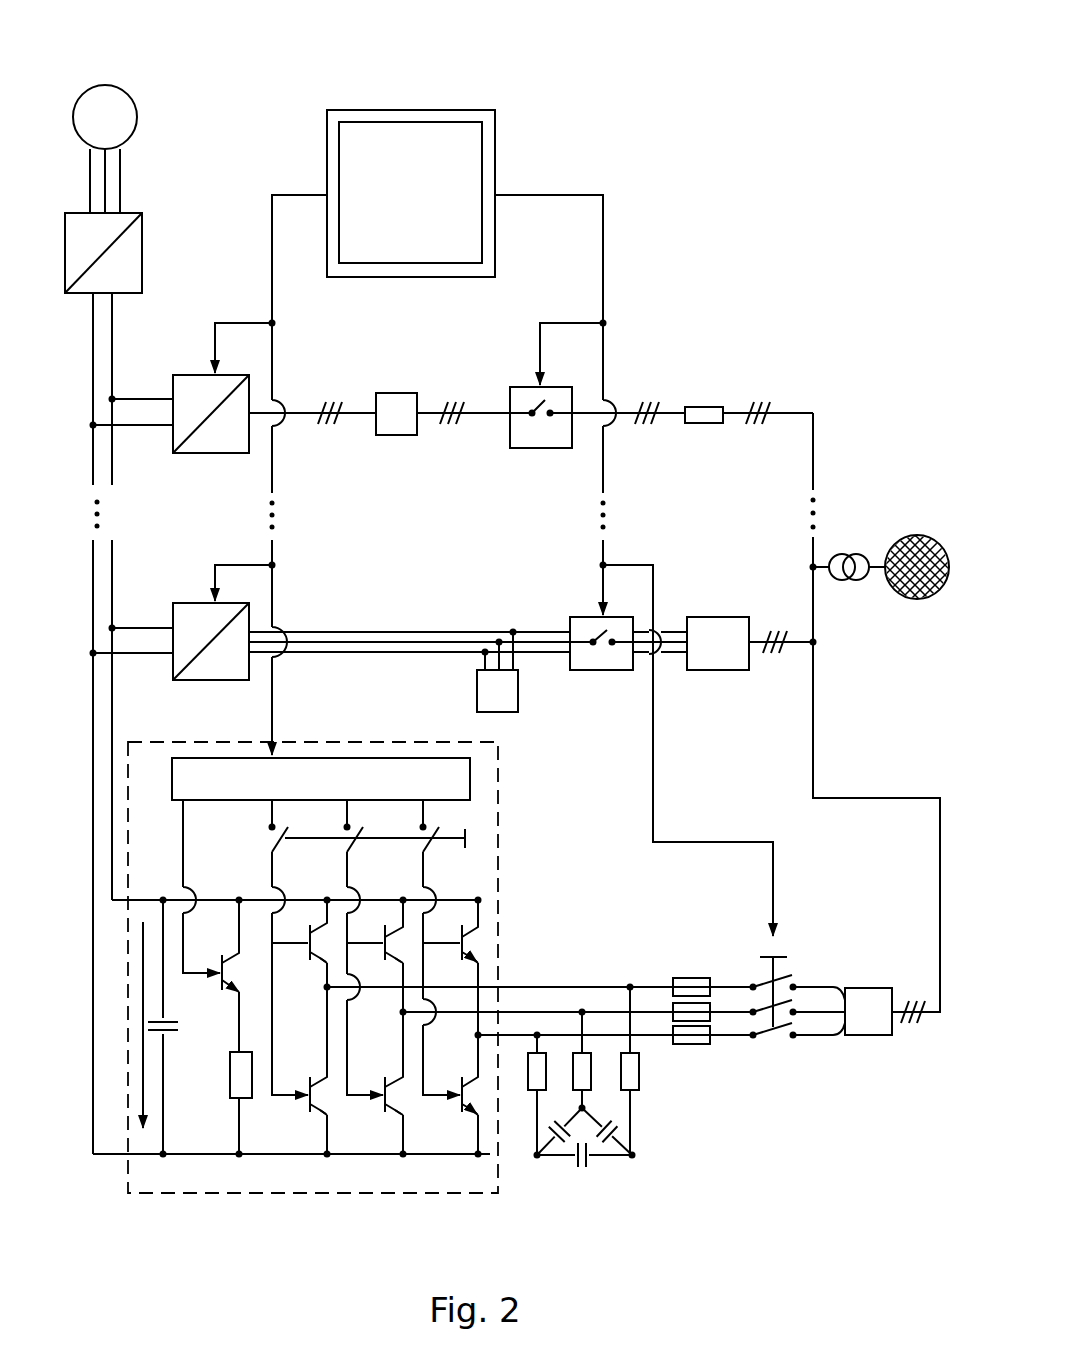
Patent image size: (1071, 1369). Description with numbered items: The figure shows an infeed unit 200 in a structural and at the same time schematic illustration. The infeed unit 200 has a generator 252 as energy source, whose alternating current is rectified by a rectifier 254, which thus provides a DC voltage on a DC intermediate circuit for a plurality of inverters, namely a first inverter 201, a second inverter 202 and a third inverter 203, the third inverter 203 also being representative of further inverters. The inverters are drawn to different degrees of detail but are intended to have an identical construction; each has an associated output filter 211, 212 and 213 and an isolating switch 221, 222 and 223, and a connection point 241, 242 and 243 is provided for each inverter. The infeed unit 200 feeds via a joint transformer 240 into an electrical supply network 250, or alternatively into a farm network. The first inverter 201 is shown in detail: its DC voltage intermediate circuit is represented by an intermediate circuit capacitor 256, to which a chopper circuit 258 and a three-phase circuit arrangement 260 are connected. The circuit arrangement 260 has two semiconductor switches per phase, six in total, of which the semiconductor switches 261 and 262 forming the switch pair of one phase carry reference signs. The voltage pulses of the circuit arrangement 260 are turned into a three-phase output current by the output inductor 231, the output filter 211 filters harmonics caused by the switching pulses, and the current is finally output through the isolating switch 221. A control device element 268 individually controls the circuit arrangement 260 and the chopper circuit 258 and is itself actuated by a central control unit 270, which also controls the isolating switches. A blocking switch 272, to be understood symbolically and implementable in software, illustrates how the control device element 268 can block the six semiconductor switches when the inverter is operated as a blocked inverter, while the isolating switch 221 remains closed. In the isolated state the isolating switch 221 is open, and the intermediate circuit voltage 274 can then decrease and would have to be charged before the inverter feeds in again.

The infeed unit 200 is at (635, 98).
The first inverter 201 is at (515, 1212).
The second inverter 202 is at (178, 590).
The third inverter 203 is at (188, 365).
The output filter 211 is at (638, 1180).
The output filter 212 is at (535, 700).
The output filter 213 is at (393, 440).
The isolating switch 221 is at (775, 1053).
The isolating switch 222 is at (583, 612).
The isolating switch 223 is at (550, 442).
The output inductor 231 is at (697, 1068).
The joint transformer 240 is at (853, 548).
The connection point 241 is at (880, 968).
The connection point 242 is at (703, 608).
The connection point 243 is at (715, 390).
The electrical supply network 250 is at (922, 522).
The generator 252 is at (158, 105).
The rectifier 254 is at (157, 238).
The intermediate circuit capacitor 256 is at (152, 1013).
The chopper circuit 258 is at (227, 1173).
The three-phase circuit arrangement 260 is at (445, 1081).
The semiconductor switch 261 is at (483, 915).
The semiconductor switch 262 is at (448, 1112).
The control device element 268 is at (353, 782).
The central control unit 270 is at (403, 88).
The blocking switch 272 is at (478, 833).
The intermediate circuit voltage 274 is at (145, 1047).